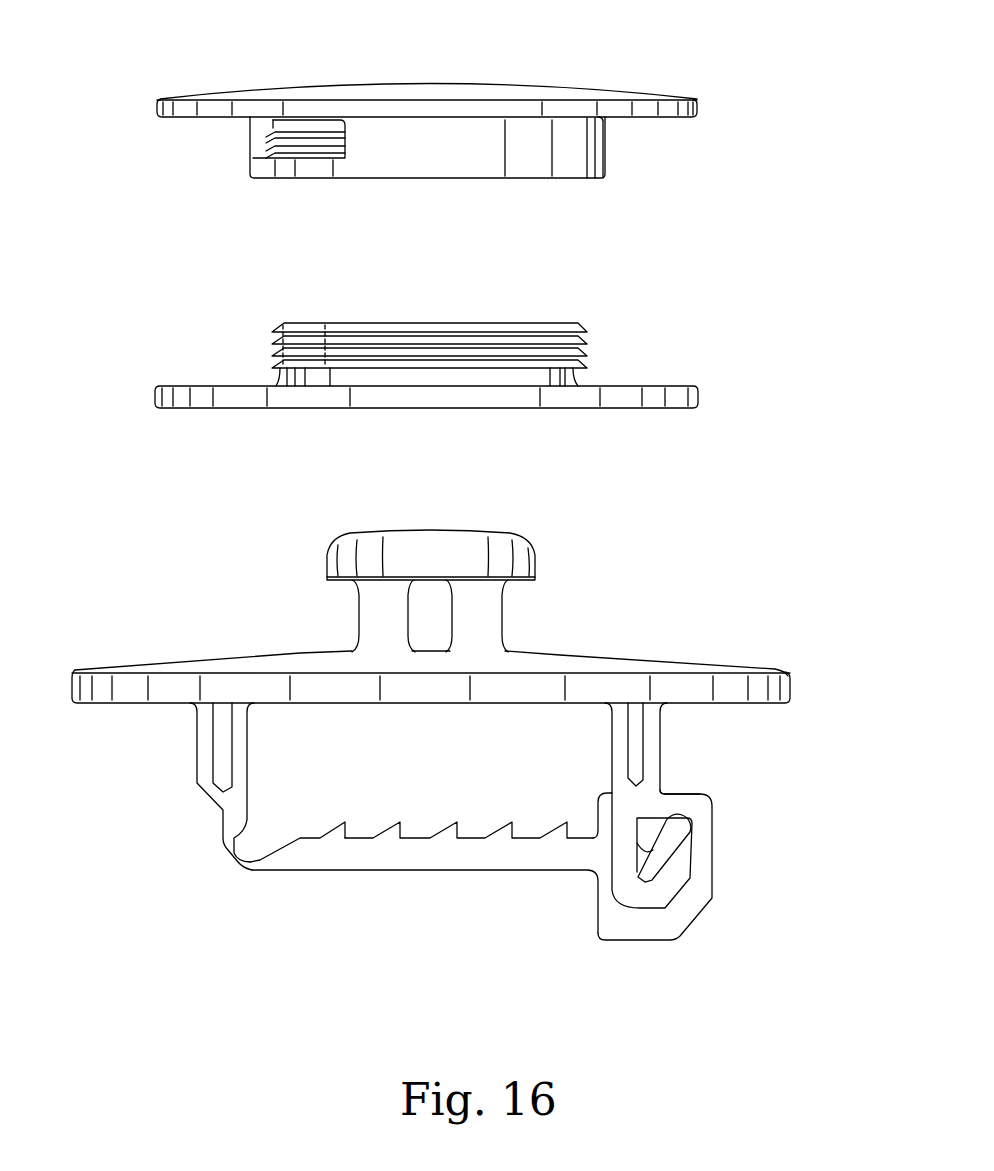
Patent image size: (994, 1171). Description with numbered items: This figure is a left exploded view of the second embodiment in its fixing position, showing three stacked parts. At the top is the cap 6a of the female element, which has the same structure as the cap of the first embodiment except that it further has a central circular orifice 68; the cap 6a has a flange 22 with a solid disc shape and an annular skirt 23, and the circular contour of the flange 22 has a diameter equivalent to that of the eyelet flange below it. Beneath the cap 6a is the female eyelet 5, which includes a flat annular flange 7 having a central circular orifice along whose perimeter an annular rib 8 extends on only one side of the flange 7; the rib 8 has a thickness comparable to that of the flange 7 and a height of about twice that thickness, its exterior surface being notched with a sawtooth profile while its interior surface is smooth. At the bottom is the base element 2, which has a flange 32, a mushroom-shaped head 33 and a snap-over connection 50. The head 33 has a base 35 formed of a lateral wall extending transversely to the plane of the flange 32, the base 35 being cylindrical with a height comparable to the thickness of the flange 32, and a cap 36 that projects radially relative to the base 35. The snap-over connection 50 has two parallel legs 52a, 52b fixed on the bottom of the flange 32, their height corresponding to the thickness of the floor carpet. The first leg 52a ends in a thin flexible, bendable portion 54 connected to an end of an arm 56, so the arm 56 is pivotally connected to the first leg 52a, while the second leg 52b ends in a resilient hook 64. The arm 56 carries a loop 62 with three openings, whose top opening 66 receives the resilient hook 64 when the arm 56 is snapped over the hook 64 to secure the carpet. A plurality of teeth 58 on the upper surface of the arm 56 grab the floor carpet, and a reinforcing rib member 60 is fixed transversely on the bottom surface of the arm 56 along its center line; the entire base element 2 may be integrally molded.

The cap 6a is at (447, 92).
The central circular orifice 68 is at (457, 85).
The flange 22 is at (667, 110).
The annular skirt 23 is at (603, 150).
The female eyelet 5 is at (479, 382).
The flat annular flange 7 is at (673, 402).
The annular rib 8 is at (587, 360).
The base element 2 is at (449, 738).
The mushroom-shaped head 33 is at (386, 589).
The cap 36 is at (520, 558).
The base 35 is at (488, 618).
The flange 32 is at (775, 690).
The snap-over connection 50 is at (423, 833).
The first leg 52a is at (208, 746).
The second leg 52b is at (650, 753).
The thin flexible, bendable portion 54 is at (240, 860).
The arm 56 is at (424, 849).
The teeth 58 is at (505, 830).
The reinforcing rib member 60 is at (578, 888).
The loop 62 is at (699, 853).
The resilient hook 64 is at (672, 842).
The top opening 66 is at (680, 797).